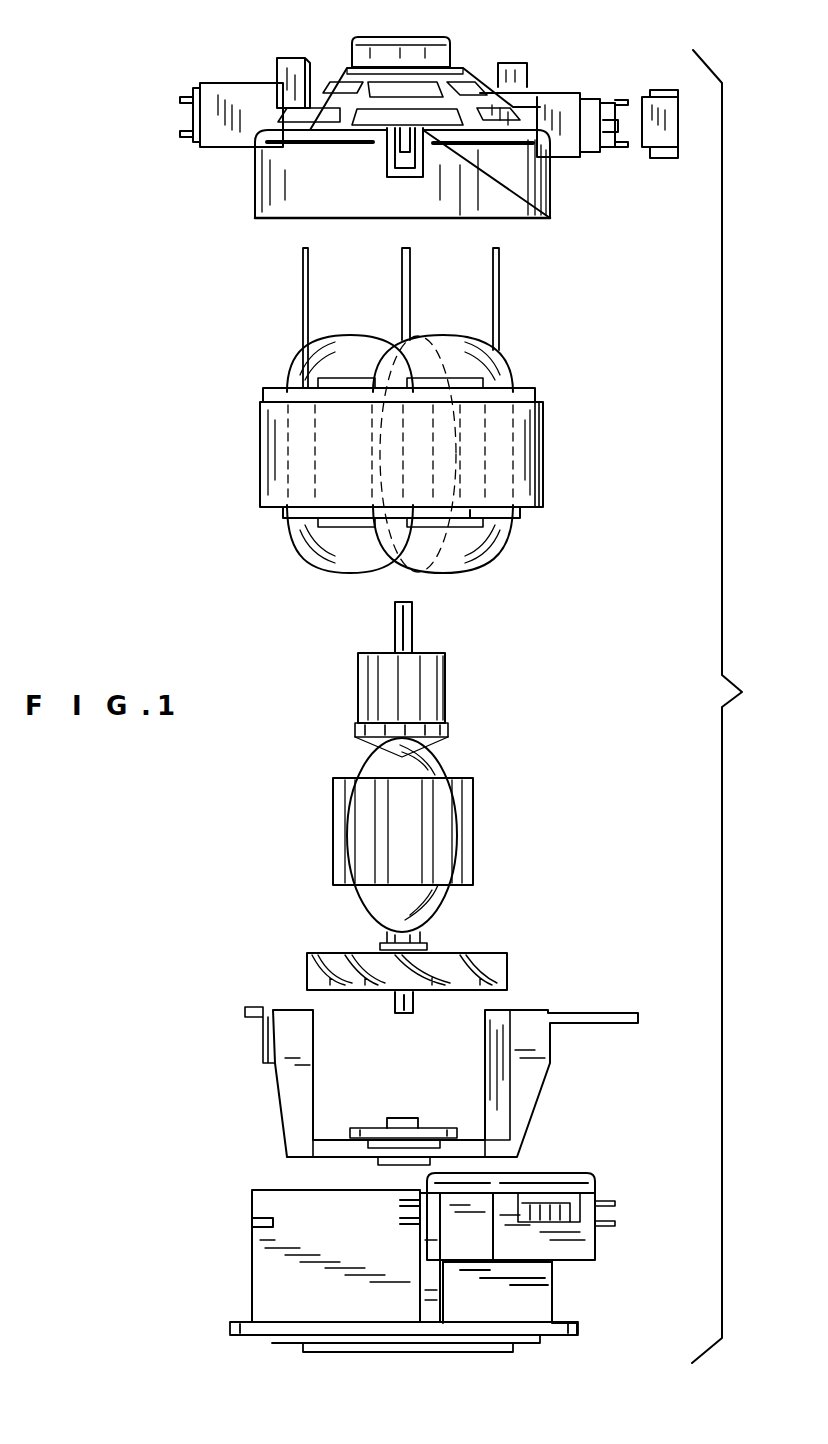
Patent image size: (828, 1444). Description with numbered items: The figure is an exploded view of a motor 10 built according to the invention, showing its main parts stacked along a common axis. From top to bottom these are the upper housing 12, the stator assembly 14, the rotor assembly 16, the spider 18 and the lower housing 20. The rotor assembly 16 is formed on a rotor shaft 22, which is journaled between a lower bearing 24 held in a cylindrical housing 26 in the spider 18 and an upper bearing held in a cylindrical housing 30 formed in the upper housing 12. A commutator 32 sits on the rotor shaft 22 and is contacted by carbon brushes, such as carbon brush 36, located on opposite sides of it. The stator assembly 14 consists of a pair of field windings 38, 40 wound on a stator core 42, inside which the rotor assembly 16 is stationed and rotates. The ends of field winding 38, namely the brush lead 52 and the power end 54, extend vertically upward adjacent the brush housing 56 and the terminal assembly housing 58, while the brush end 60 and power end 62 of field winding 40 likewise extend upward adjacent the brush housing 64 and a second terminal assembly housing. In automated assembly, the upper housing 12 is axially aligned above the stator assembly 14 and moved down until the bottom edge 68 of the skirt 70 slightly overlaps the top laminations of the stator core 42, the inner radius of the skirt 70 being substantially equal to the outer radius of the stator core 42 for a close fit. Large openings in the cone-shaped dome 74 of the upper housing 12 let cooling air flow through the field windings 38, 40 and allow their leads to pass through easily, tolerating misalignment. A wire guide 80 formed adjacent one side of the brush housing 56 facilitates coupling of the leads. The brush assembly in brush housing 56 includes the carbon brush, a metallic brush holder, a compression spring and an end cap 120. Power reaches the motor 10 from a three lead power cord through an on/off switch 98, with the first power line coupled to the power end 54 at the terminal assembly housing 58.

The motor 10 is at (738, 706).
The upper housing 12 is at (400, 123).
The stator assembly 14 is at (405, 410).
The rotor assembly 16 is at (444, 826).
The spider 18 is at (441, 1050).
The lower housing 20 is at (449, 1229).
The rotor shaft 22 is at (413, 623).
The lower bearing 24 is at (402, 1117).
The cylindrical housing 26 is at (377, 1088).
The cylindrical housing 30 is at (393, 33).
The commutator 32 is at (447, 687).
The carbon brush 36 is at (175, 78).
The field winding 38 is at (513, 367).
The field winding 40 is at (293, 363).
The stator core 42 is at (257, 467).
The brush lead 52 is at (513, 303).
The power end 54 is at (398, 280).
The brush housing 56 is at (550, 87).
The terminal assembly housing 58 is at (366, 152).
The brush end 60 is at (298, 287).
The power end 62 is at (413, 307).
The brush housing 64 is at (235, 80).
The bottom edge 68 is at (290, 222).
The skirt 70 is at (337, 72).
The cone-shaped dome 74 is at (470, 72).
The wire guide 80 is at (632, 81).
The on/off switch 98 is at (597, 1250).
The end cap 120 is at (660, 163).